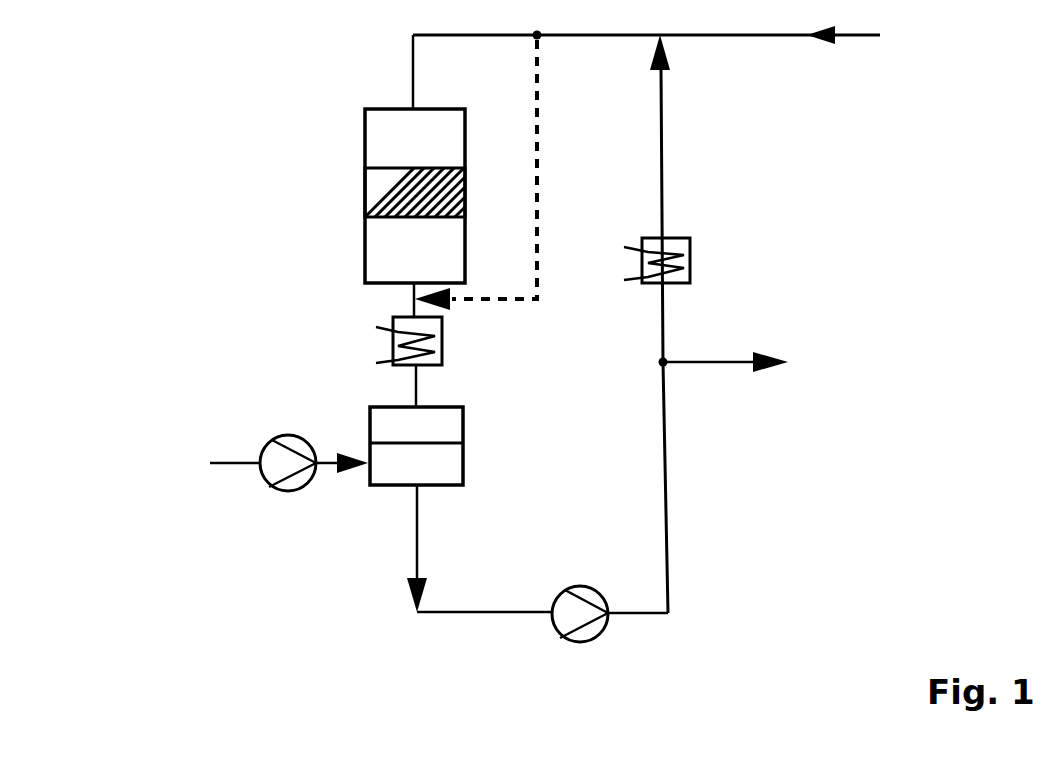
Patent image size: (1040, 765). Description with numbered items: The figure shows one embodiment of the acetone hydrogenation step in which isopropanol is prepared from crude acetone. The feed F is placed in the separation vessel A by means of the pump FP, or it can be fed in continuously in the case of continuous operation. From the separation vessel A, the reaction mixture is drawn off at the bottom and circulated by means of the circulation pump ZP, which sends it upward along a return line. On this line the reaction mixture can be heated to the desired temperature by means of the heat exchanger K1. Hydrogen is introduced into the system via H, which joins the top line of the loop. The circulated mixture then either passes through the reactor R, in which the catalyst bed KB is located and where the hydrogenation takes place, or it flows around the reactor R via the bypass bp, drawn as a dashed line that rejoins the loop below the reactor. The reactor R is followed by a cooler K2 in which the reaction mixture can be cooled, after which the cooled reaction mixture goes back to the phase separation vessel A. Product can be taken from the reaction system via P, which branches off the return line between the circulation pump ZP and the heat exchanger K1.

The reactor R is at (415, 196).
The catalyst bed KB is at (414, 197).
The bypass bp is at (498, 175).
The heat exchanger K1 is at (692, 260).
The cooler K2 is at (436, 341).
The separation vessel A is at (416, 446).
The feed F is at (272, 467).
The pump FP is at (288, 486).
The circulation pump ZP is at (580, 642).
The product outlet P is at (724, 389).
The hydrogen inlet H is at (646, 71).